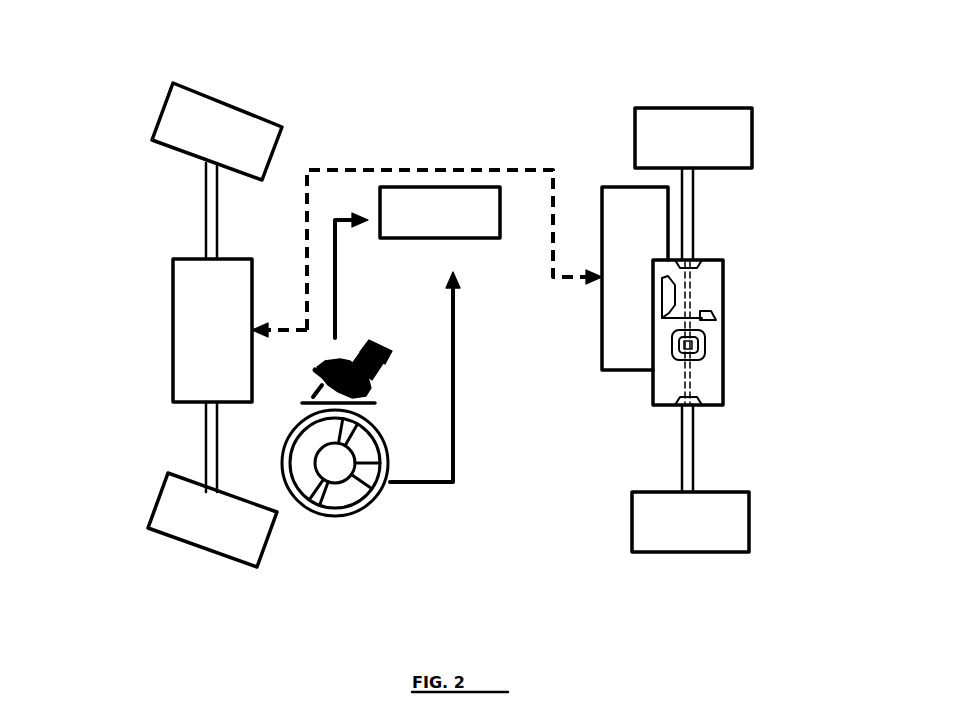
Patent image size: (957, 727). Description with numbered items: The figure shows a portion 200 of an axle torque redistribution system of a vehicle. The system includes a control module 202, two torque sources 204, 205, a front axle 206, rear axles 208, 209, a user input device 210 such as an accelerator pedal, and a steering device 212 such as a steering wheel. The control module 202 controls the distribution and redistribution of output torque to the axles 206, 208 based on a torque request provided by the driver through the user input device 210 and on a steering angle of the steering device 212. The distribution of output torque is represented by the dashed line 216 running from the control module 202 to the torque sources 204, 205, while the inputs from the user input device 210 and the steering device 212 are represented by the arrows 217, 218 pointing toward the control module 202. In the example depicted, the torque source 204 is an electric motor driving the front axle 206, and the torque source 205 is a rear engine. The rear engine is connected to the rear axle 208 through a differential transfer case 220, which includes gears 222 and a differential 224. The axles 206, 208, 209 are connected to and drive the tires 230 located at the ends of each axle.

The portion of axle torque redistribution system 200 is at (860, 13).
The control module 202 is at (465, 237).
The torque source 204 is at (173, 290).
The torque source 205 is at (610, 185).
The front axle 206 is at (205, 258).
The rear axle 208 is at (693, 243).
The rear axle 209 is at (693, 428).
The user input device 210 is at (315, 379).
The steering device 212 is at (283, 462).
The dashed line 216 is at (402, 170).
The arrow 217 is at (337, 272).
The arrow 218 is at (455, 420).
The differential transfer case 220 is at (723, 283).
The gears 222 is at (660, 308).
The differential 224 is at (688, 352).
The tires 230 is at (165, 103).